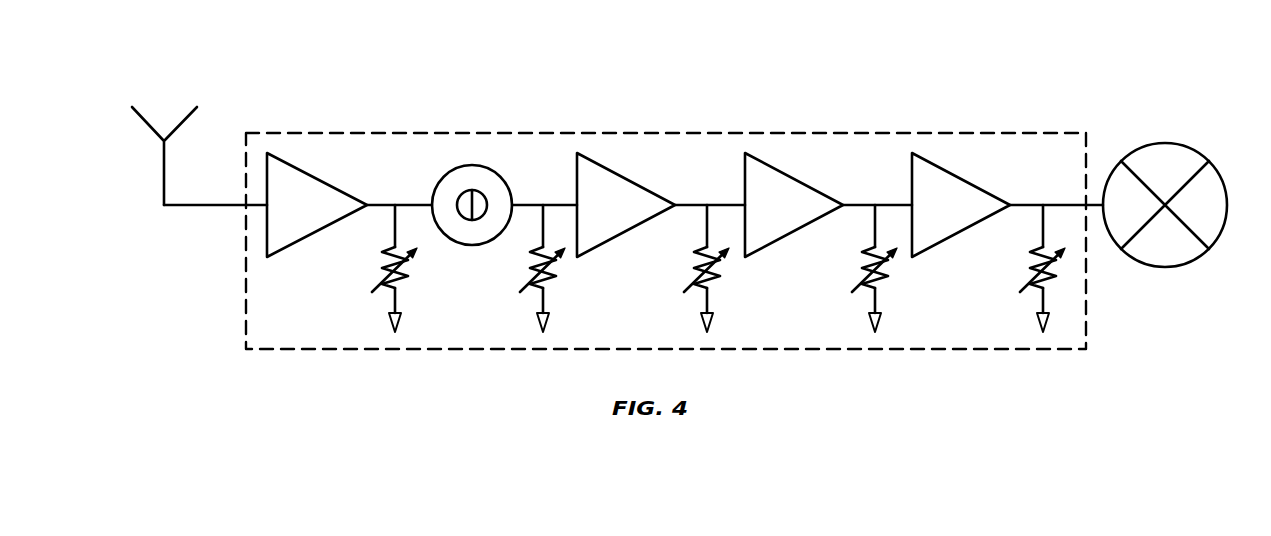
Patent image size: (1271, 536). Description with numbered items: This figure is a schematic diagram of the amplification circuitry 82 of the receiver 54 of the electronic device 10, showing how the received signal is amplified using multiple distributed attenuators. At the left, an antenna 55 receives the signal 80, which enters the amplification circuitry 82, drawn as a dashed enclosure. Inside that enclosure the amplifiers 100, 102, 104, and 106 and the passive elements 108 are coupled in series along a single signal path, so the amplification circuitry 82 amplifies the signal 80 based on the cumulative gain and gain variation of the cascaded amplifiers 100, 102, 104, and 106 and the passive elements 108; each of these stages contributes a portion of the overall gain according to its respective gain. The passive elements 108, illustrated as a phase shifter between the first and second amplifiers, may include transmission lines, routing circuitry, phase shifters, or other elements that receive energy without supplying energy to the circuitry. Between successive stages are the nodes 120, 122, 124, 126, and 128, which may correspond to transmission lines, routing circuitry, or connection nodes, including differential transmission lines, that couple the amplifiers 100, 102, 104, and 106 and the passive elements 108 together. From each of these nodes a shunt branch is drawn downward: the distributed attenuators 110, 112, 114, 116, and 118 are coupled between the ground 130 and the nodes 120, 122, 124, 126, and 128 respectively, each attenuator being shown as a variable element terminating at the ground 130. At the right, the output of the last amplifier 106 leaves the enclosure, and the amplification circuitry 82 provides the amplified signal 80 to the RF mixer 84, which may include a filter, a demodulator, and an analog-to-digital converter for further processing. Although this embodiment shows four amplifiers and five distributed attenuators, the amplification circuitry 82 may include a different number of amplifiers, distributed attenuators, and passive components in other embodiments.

The electronic device 10 is at (968, 86).
The receiver 54 is at (666, 220).
The antenna 55 is at (147, 124).
The signal 80 is at (187, 205).
The amplification circuitry 82 is at (668, 132).
The RF mixer 84 is at (1165, 266).
The amplifier 100 is at (317, 230).
The amplifier 102 is at (627, 235).
The amplifier 104 is at (795, 235).
The amplifier 106 is at (960, 235).
The passive elements 108 is at (471, 246).
The distributed attenuator 110 is at (380, 282).
The distributed attenuator 112 is at (528, 282).
The distributed attenuator 114 is at (692, 282).
The distributed attenuator 116 is at (860, 282).
The distributed attenuator 118 is at (1027, 282).
The node 120 is at (373, 203).
The node 122 is at (521, 203).
The node 124 is at (685, 203).
The node 126 is at (853, 203).
The node 128 is at (1020, 203).
The ground 130 is at (391, 319).